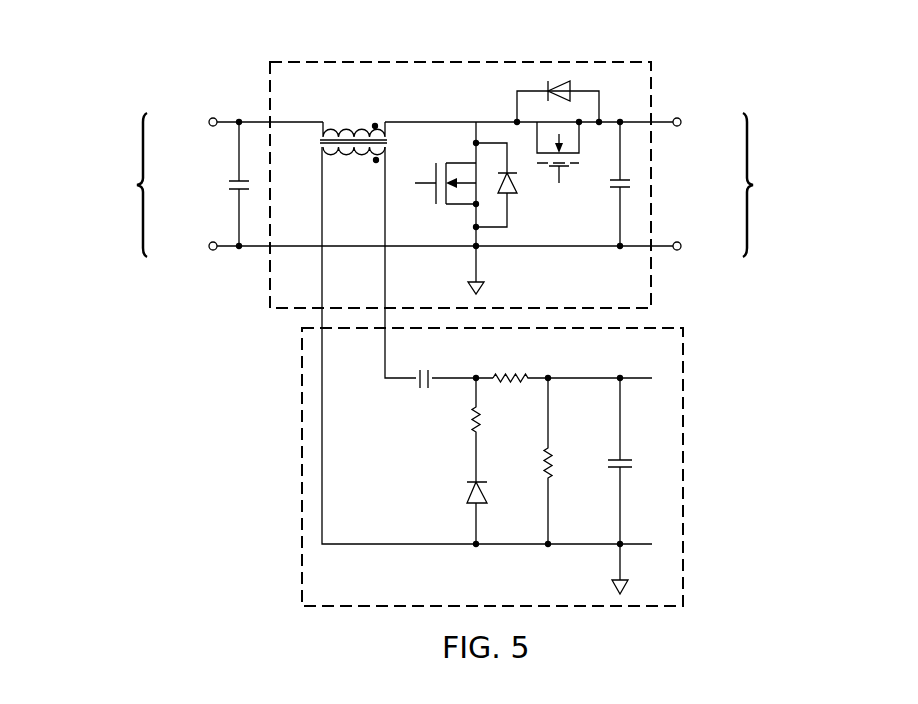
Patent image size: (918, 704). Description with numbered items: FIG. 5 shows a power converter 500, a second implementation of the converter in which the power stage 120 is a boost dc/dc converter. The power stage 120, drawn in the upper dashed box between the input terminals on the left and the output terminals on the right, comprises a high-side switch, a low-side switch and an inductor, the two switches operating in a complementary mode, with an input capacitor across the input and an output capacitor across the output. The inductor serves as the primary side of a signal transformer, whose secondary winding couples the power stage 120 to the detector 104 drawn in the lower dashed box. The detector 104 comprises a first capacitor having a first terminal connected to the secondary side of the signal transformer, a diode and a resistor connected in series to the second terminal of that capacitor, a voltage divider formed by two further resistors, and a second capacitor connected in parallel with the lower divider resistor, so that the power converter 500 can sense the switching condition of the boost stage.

The power converter 500 is at (187, 472).
The power stage 120 is at (448, 62).
The detector 104 is at (302, 482).